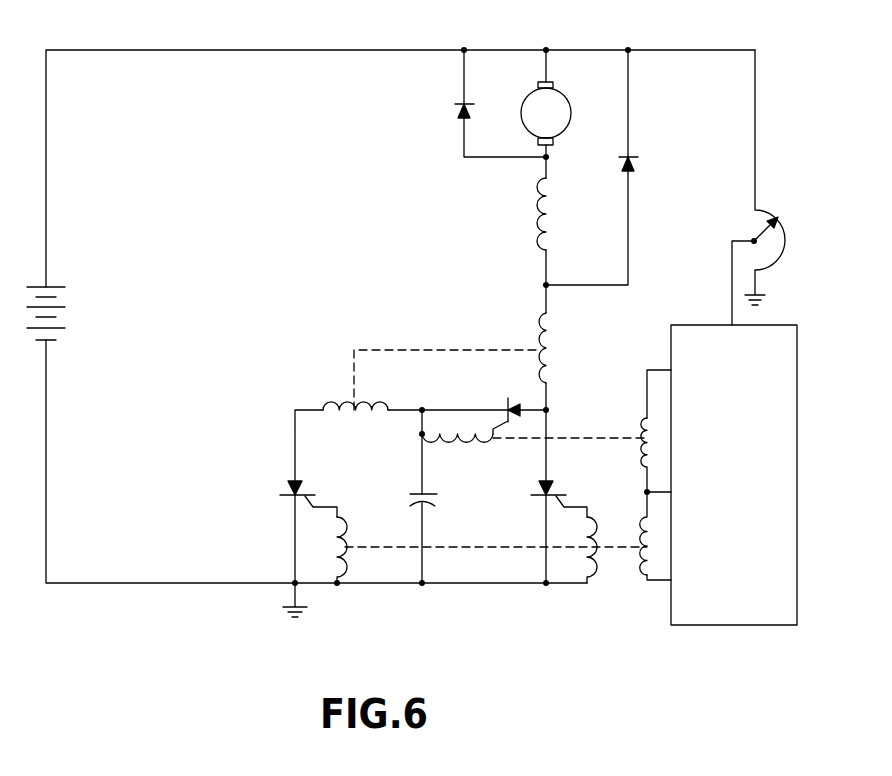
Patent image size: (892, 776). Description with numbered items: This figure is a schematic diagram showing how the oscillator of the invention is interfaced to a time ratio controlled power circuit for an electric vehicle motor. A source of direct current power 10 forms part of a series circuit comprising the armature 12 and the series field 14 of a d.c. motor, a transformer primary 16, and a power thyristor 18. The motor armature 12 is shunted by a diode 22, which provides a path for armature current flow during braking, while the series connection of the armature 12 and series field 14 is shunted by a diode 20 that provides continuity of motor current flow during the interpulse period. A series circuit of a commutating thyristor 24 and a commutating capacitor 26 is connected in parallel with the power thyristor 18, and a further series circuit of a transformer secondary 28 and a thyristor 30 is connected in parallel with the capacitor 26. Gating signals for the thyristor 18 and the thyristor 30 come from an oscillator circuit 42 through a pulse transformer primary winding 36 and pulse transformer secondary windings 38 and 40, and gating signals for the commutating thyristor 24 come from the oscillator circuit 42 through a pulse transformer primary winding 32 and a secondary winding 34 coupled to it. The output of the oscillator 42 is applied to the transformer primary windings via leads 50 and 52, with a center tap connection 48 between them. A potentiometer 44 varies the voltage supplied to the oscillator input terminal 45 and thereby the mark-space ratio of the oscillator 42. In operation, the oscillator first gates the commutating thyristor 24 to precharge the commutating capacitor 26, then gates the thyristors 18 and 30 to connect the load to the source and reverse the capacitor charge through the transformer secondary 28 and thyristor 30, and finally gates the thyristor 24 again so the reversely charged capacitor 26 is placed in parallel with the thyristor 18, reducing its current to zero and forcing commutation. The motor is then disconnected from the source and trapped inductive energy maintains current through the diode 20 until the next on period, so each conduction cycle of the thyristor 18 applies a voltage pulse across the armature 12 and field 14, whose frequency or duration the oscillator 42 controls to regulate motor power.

The source of direct current power 10 is at (62, 286).
The armature 12 is at (566, 99).
The series field 14 is at (553, 212).
The transformer primary 16 is at (553, 343).
The power thyristor 18 is at (560, 490).
The diode 20 is at (635, 155).
The diode 22 is at (454, 106).
The commutating thyristor 24 is at (511, 402).
The commutating capacitor 26 is at (408, 492).
The transformer secondary 28 is at (365, 413).
The thyristor 30 is at (288, 490).
The pulse transformer primary winding 32 is at (641, 418).
The transformer secondary winding 34 is at (471, 441).
The pulse transformer primary winding 36 is at (641, 527).
The pulse transformer secondary winding 38 is at (600, 576).
The pulse transformer secondary winding 40 is at (352, 567).
The oscillator circuit 42 is at (712, 628).
The potentiometer 44 is at (770, 211).
The oscillator input terminal 45 is at (726, 321).
The center tap conductor 48 is at (644, 492).
The lead 50 is at (655, 366).
The lead 52 is at (668, 585).